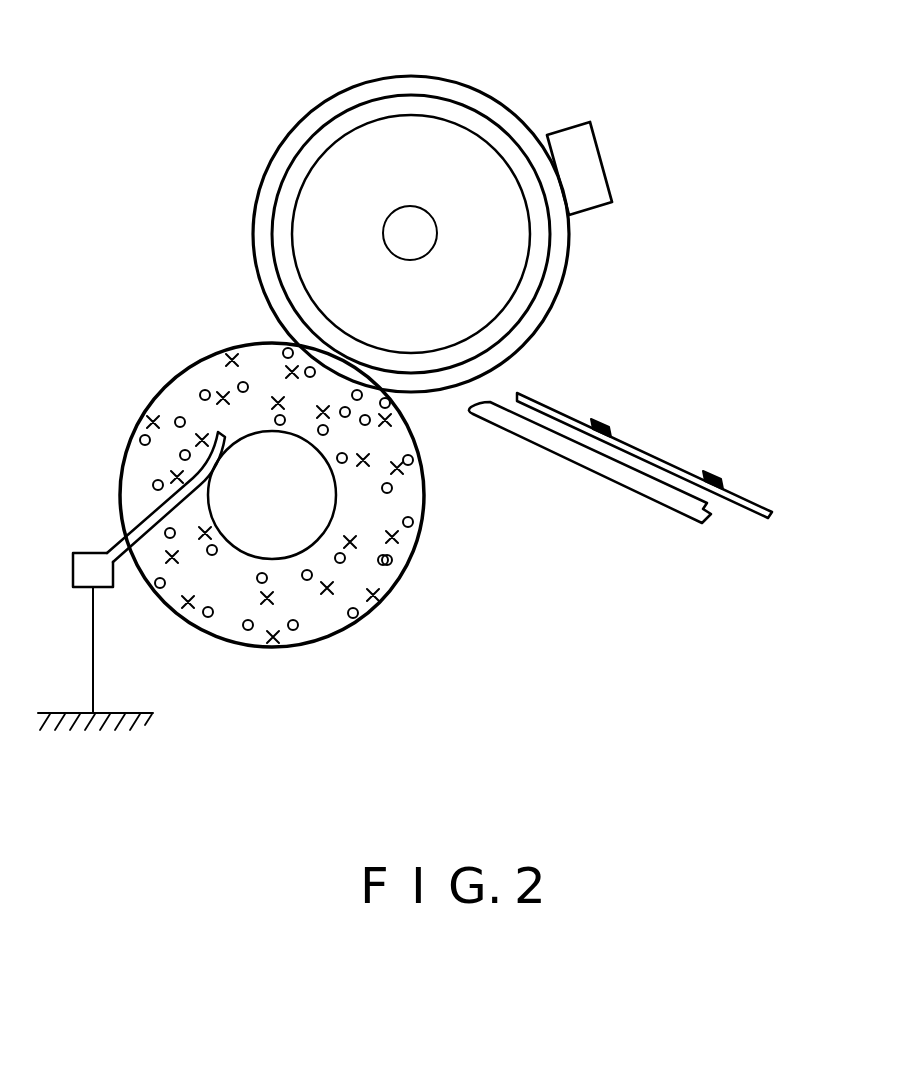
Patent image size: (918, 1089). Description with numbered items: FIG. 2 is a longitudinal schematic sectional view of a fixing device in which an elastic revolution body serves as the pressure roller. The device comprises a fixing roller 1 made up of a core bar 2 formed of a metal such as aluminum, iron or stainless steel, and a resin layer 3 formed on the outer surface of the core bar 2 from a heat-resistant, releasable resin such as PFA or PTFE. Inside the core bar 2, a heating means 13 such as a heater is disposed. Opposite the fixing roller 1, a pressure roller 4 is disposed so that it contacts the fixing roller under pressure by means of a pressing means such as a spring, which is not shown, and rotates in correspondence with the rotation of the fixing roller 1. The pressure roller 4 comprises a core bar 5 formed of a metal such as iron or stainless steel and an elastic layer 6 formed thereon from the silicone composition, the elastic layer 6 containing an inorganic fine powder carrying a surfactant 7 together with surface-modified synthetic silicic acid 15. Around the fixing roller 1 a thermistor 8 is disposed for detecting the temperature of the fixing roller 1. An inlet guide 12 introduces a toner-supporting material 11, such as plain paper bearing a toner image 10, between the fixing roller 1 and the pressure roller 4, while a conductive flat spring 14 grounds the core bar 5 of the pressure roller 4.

The fixing roller 1 is at (372, 76).
The core bar 2 is at (288, 197).
The resin layer 3 is at (268, 273).
The pressure roller 4 is at (425, 517).
The core bar 5 is at (252, 542).
The elastic layer 6 is at (392, 570).
The inorganic fine powder carrying a surfactant 7 is at (355, 623).
The thermistor 8 is at (593, 172).
The toner image 10 is at (603, 420).
The toner-supporting material 11 is at (688, 473).
The inlet guide 12 is at (680, 505).
The heating means 13 is at (417, 225).
The conductive flat spring 14 is at (115, 545).
The surface-modified synthetic silicic acid 15 is at (272, 638).